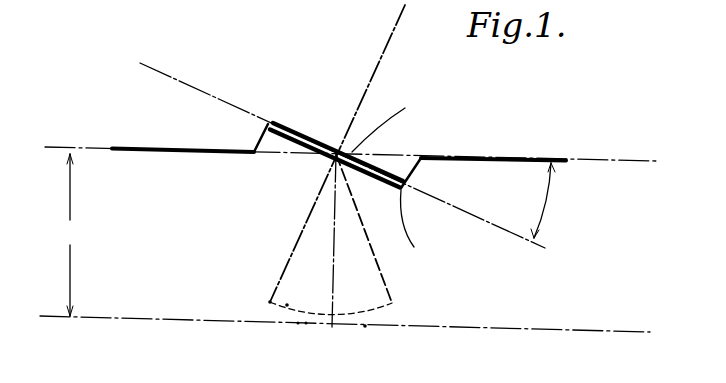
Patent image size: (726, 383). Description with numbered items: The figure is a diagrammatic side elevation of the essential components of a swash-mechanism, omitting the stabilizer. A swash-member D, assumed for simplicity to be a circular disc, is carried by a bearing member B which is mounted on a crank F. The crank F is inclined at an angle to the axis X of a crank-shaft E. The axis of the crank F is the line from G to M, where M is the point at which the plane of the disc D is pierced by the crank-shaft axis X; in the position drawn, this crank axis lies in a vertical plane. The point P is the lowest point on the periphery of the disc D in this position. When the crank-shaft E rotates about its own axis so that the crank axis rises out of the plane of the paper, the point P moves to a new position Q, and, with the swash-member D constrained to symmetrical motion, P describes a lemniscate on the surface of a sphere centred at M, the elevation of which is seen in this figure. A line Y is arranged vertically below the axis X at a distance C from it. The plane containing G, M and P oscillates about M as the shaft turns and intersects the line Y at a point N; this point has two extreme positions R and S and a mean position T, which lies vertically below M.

The axis of crank-shaft X is at (351, 154).
The line below crank-shaft axis Y is at (347, 325).
The distance between axes C is at (70, 235).
The point on crank axis G is at (332, 149).
The swash-member D is at (399, 28).
The bearing member B is at (292, 122).
The crank-shaft E is at (484, 158).
The point where disc plane is pierced by crank-shaft axis M is at (391, 120).
The crank F is at (420, 219).
The mean position of point N T is at (334, 326).
The extreme position of point N S is at (365, 326).
The lowest point on disc periphery P is at (263, 310).
The new position of point P Q is at (287, 305).
The extreme position of point N R is at (298, 323).
The intersection point of plane GMP with line YY N is at (306, 323).